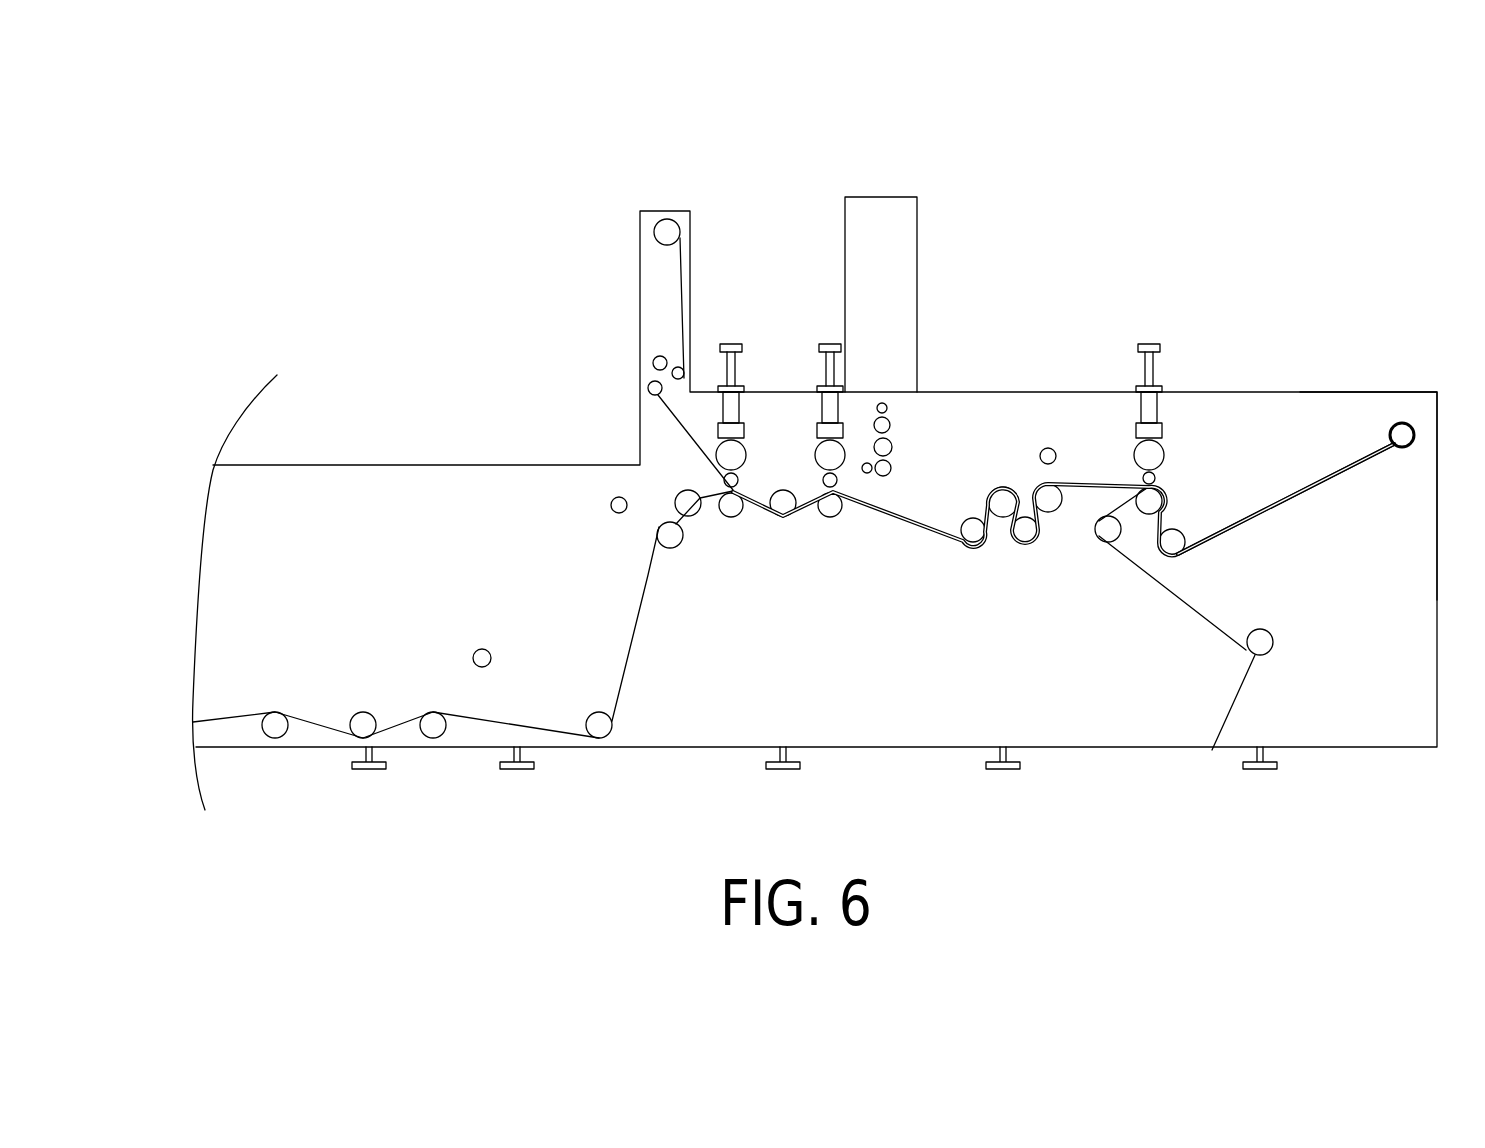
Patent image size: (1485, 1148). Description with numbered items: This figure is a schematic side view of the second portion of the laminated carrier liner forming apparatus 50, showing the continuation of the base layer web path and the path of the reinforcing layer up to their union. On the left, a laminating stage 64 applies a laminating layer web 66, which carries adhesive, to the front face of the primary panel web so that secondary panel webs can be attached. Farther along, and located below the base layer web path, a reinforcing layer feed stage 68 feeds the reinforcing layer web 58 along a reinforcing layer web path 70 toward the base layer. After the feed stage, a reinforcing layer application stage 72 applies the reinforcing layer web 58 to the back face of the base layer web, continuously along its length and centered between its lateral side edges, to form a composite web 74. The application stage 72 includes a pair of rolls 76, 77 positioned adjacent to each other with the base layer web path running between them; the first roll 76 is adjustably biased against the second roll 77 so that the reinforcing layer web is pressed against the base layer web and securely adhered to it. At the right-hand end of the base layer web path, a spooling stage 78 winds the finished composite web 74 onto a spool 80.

The laminated carrier liner forming apparatus 50 is at (968, 173).
The reinforcing layer web 58 is at (1155, 583).
The laminating stage 64 is at (588, 345).
The laminating layer web 66 is at (672, 428).
The reinforcing layer feed stage 68 is at (1182, 698).
The reinforcing layer web path 70 is at (1212, 750).
The reinforcing layer application stage 72 is at (1115, 370).
The composite web 74 is at (1295, 482).
The first roll 76 is at (1157, 449).
The second roll 77 is at (1143, 510).
The spooling stage 78 is at (1360, 277).
The spool 80 is at (1400, 437).